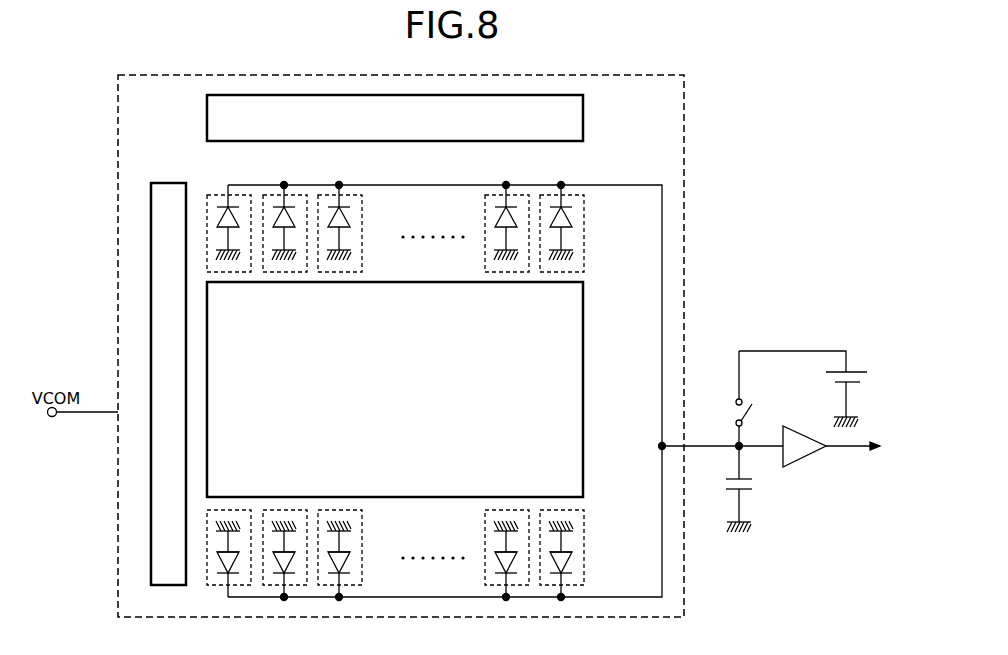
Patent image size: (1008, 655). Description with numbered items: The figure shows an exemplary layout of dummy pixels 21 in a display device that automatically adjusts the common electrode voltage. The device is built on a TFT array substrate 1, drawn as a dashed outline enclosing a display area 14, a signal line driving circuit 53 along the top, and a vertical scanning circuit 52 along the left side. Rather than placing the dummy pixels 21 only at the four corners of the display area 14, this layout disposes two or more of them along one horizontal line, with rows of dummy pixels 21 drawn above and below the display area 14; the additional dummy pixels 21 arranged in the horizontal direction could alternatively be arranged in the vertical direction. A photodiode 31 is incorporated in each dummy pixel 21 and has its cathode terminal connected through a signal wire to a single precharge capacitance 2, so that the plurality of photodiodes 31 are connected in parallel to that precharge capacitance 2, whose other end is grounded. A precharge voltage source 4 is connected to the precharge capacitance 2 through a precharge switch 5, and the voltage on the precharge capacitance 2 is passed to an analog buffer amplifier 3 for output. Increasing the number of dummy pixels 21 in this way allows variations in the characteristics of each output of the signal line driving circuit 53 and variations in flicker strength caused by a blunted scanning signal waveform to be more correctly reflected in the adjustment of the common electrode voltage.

The TFT array substrate 1 is at (685, 122).
The signal line driving circuit 53 is at (207, 113).
The vertical scanning circuit 52 is at (165, 183).
The display area 14 is at (584, 358).
The photodiode 31 is at (349, 220).
The dummy pixels 21 is at (584, 215).
The precharge switch 5 is at (737, 411).
The precharge voltage source (Vprc) 4 is at (856, 371).
The analog buffer amplifier 3 is at (799, 431).
The precharge capacitance (Cp) 2 is at (754, 486).